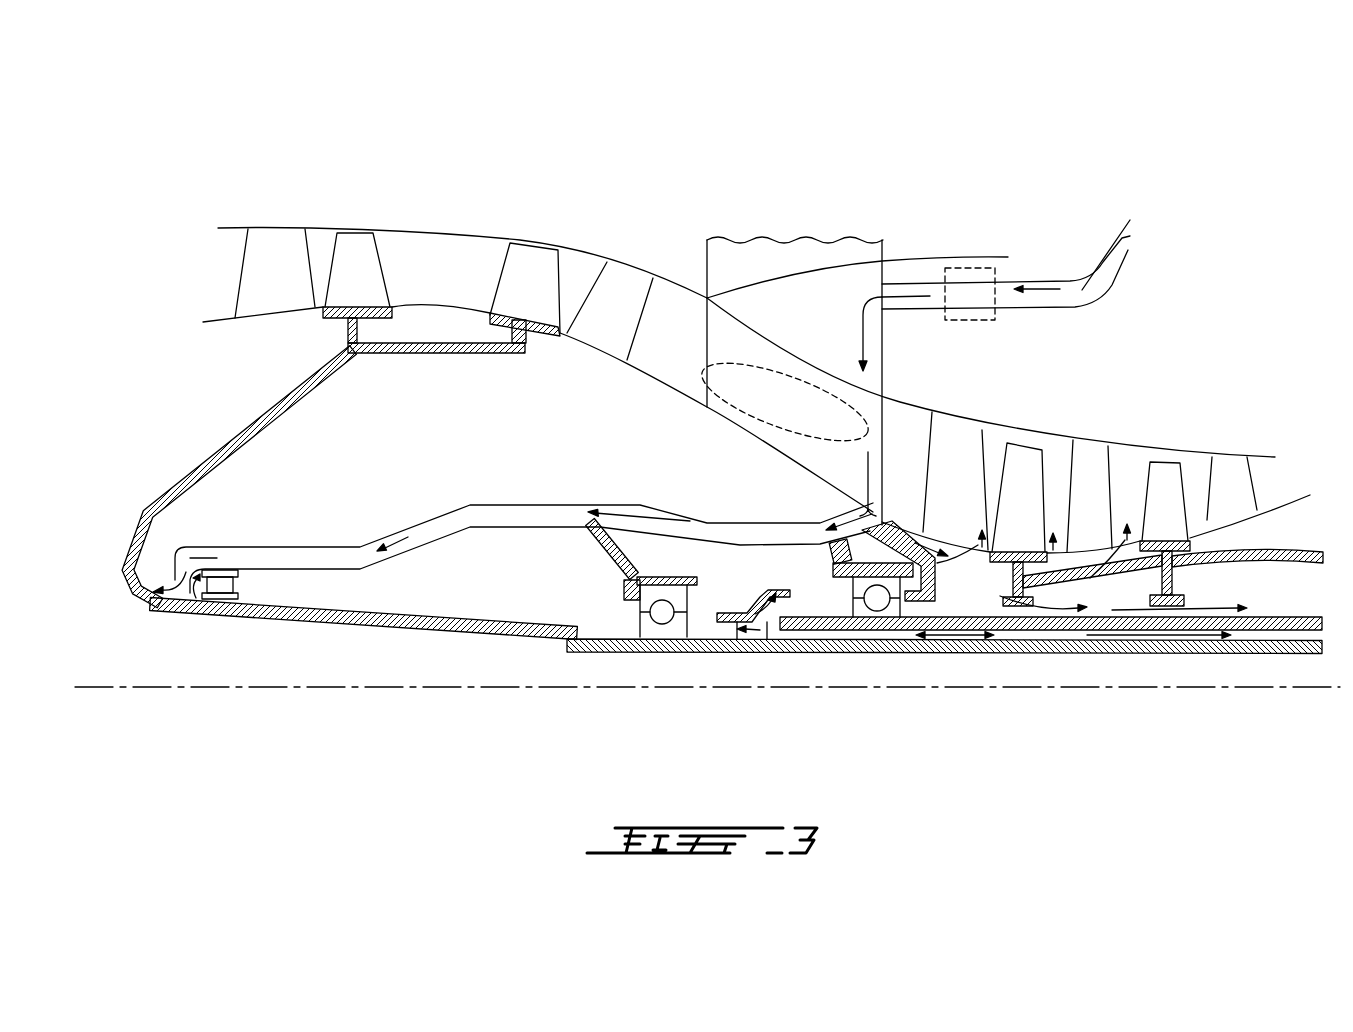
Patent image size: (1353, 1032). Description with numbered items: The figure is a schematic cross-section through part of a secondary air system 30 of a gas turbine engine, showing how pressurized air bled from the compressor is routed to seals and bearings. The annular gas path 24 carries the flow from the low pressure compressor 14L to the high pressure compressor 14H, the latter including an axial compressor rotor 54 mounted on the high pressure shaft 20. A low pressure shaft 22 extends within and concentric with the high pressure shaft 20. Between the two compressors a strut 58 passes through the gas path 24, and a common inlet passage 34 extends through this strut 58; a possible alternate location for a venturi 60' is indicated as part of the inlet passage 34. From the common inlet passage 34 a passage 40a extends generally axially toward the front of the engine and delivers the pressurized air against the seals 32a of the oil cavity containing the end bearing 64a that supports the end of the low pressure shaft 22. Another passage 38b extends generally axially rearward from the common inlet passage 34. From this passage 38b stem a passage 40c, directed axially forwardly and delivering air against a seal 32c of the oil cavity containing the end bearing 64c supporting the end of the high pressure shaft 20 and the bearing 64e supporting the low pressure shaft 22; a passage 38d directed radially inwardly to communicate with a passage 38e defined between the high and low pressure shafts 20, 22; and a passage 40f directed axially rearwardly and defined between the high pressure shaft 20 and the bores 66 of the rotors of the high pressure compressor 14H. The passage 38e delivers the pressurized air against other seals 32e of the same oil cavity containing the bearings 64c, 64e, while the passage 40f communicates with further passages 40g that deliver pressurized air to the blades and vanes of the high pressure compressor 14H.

The low pressure compressor 14L is at (303, 202).
The annular gas path 24 is at (207, 291).
The strut 58 is at (723, 263).
The venturi 60' is at (970, 247).
The secondary air system 30 is at (1160, 290).
The high pressure compressor 14H is at (1110, 400).
The axial compressor rotor 54 is at (1103, 462).
The common inlet passage 34 is at (908, 311).
The passage 38b is at (912, 560).
The passages 40g is at (1100, 592).
The passage 40f is at (1098, 597).
The passage 38e is at (1036, 632).
The bores 66 is at (1167, 607).
The high pressure shaft 20 is at (822, 631).
The low pressure shaft 22 is at (530, 636).
The passage 40a is at (527, 508).
The end bearing 64a is at (228, 600).
The seals 32a is at (188, 598).
The bearing 64e is at (673, 625).
The seals 32e is at (777, 607).
The end bearing 64c is at (878, 612).
The seal 32c is at (904, 603).
The passage 40c is at (925, 601).
The passage 38d is at (968, 578).